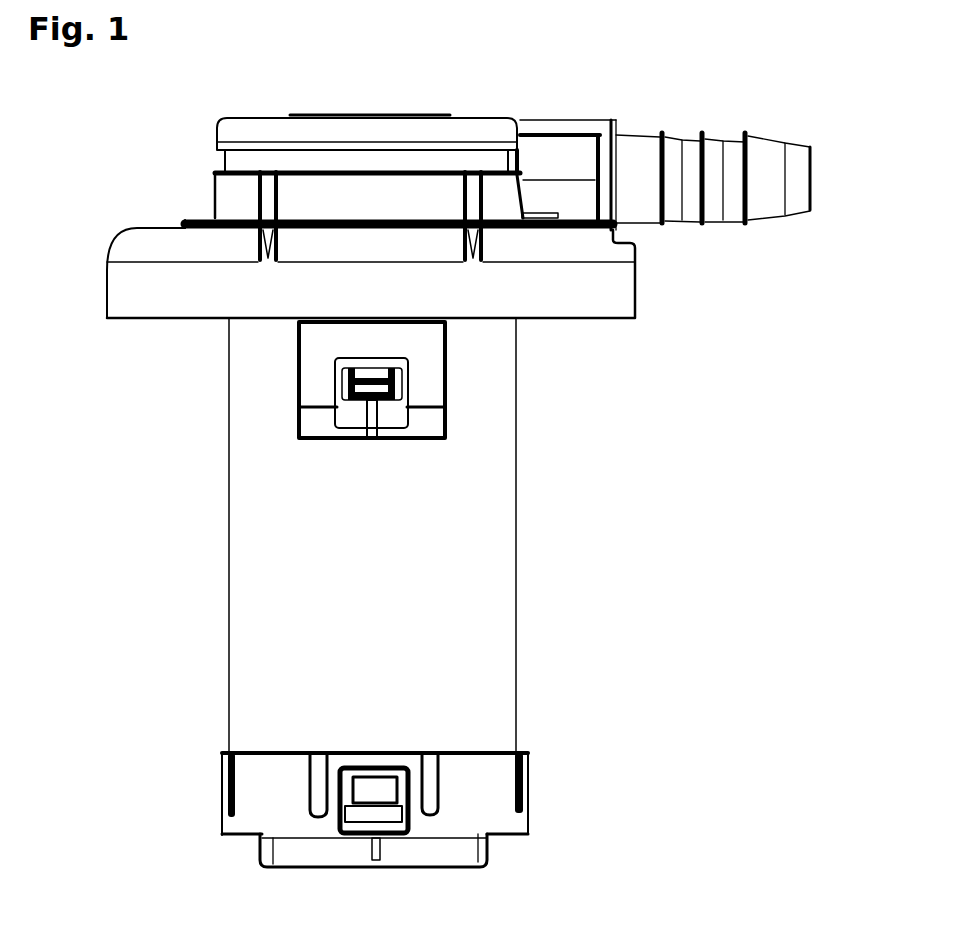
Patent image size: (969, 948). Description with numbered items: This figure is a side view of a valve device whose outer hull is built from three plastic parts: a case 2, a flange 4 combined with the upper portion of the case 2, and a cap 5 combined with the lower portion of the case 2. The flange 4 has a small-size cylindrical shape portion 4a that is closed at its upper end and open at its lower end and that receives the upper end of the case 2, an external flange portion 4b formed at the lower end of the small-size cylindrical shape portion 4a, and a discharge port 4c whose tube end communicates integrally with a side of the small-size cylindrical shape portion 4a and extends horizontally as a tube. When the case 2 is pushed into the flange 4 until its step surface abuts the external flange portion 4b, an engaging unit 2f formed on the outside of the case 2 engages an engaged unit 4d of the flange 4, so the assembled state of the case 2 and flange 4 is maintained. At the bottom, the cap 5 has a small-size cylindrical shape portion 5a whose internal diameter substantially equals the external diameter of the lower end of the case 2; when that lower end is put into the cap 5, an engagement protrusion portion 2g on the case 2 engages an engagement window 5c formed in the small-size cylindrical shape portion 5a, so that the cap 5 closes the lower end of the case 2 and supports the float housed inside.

The case 2 is at (463, 587).
The engaging unit 2f is at (337, 390).
The engagement protrusion portion 2g is at (367, 793).
The flange 4 is at (147, 235).
The small-size cylindrical shape portion 4a is at (357, 132).
The external flange portion 4b is at (128, 278).
The discharge port 4c is at (730, 150).
The engaged unit 4d is at (430, 383).
The cap 5 is at (457, 815).
The small-size cylindrical shape portion 5a is at (257, 785).
The engagement window 5c is at (385, 792).